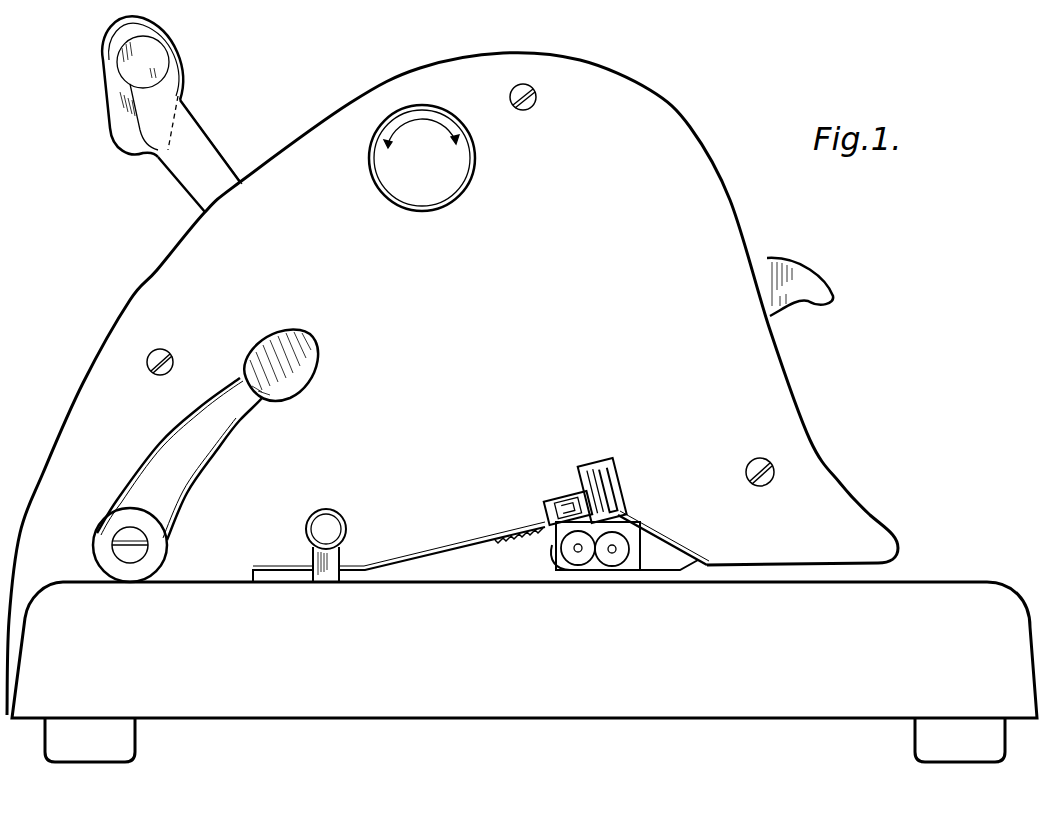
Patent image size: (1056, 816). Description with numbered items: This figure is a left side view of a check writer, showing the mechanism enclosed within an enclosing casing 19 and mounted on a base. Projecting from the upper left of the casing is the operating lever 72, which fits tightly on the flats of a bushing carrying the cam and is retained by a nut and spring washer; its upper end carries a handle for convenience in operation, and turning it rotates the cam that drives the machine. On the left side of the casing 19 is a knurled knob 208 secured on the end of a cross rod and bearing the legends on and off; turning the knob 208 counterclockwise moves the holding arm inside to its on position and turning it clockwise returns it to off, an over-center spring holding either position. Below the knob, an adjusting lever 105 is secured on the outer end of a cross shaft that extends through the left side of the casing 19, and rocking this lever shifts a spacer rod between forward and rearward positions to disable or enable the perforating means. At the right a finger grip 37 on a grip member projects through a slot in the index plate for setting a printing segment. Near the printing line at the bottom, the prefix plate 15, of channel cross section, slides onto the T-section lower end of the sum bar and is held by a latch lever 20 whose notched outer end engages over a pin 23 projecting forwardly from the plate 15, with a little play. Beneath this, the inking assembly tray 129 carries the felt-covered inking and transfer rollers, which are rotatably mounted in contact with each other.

The enclosing casing 19 is at (706, 133).
The operating lever 72 is at (200, 157).
The knurled knob 208 is at (452, 186).
The adjusting lever 105 is at (198, 452).
The finger grip 37 is at (814, 292).
The prefix plate 15 is at (548, 512).
The latch lever 20 is at (603, 495).
The pin 23 is at (606, 508).
The tray 129 is at (585, 573).